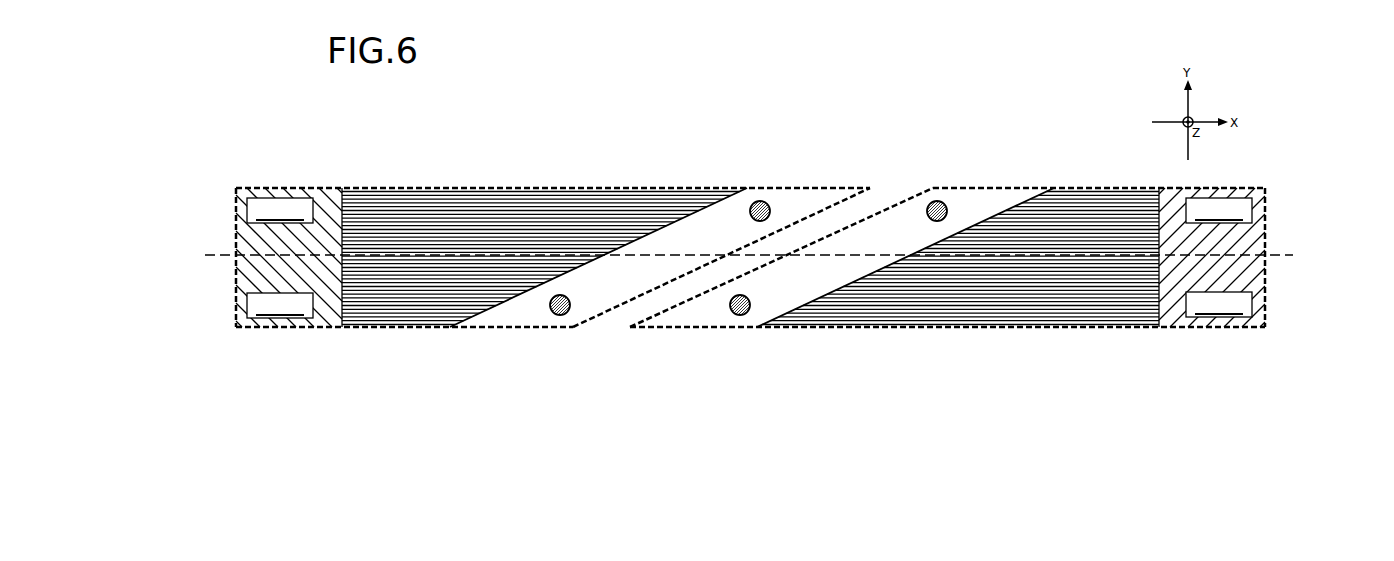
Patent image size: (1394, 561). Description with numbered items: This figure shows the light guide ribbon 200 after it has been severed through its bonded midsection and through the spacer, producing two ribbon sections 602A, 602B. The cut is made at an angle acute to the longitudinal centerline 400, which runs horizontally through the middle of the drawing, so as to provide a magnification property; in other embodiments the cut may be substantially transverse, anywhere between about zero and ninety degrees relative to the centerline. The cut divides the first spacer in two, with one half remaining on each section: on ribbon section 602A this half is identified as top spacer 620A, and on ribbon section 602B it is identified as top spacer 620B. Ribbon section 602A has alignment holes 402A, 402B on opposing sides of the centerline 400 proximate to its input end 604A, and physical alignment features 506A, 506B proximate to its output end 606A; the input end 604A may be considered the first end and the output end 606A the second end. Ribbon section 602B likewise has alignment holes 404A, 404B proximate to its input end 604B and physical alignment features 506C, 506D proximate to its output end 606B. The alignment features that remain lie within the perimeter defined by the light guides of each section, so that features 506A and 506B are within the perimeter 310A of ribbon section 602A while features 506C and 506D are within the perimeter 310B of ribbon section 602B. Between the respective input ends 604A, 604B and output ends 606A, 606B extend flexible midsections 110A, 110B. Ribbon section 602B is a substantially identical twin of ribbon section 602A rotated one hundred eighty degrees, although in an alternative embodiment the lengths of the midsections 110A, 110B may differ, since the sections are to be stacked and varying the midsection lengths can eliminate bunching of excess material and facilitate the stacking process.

The ribbon 200 is at (656, 131).
The flexible midsection 110A is at (408, 310).
The flexible midsection 110B is at (1000, 310).
The perimeter 310A is at (566, 187).
The perimeter 310B is at (1043, 328).
The longitudinal centerline 400 is at (762, 245).
The alignment hole 402A is at (280, 210).
The alignment hole 402B is at (280, 305).
The alignment hole 404A is at (1219, 210).
The alignment hole 404B is at (1219, 304).
The physical alignment feature 506A is at (560, 316).
The physical alignment feature 506B is at (760, 200).
The physical alignment feature 506C is at (740, 316).
The physical alignment feature 506D is at (946, 202).
The ribbon section 602A is at (511, 247).
The ribbon section 602B is at (987, 246).
The input end 604A is at (237, 233).
The input end 604B is at (1263, 277).
The output end 606A is at (607, 312).
The output end 606B is at (908, 200).
The top spacer 620A is at (810, 200).
The top spacer 620B is at (692, 318).